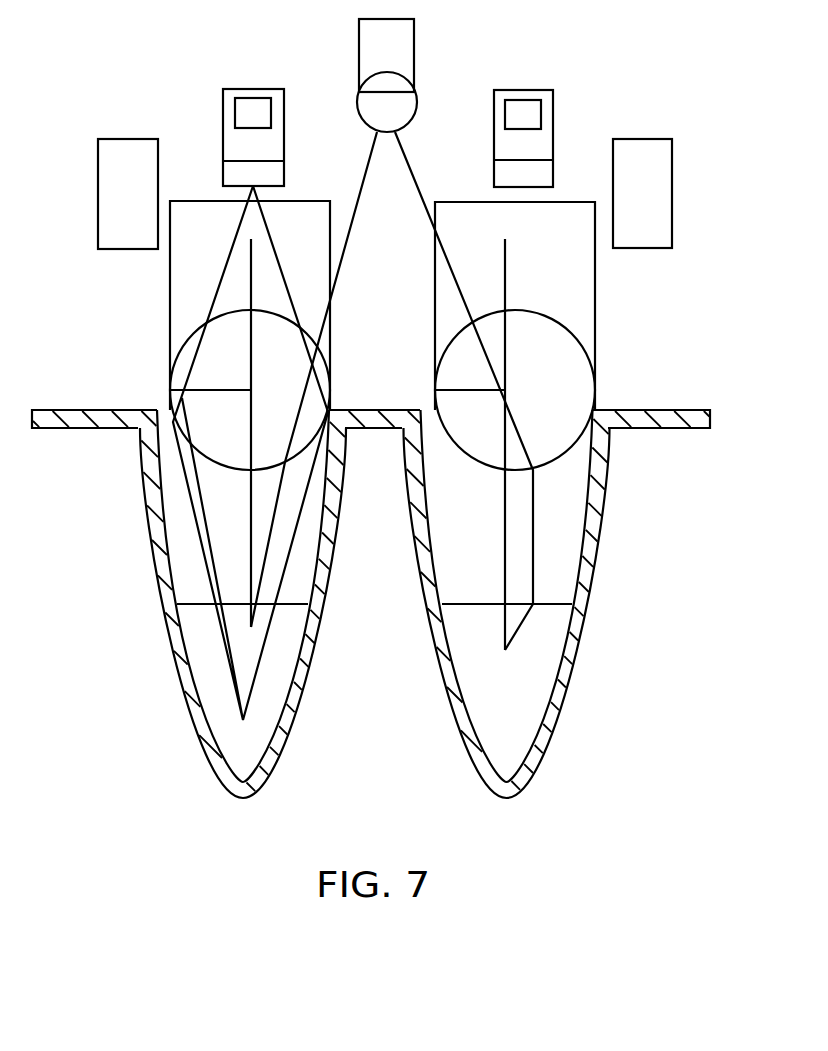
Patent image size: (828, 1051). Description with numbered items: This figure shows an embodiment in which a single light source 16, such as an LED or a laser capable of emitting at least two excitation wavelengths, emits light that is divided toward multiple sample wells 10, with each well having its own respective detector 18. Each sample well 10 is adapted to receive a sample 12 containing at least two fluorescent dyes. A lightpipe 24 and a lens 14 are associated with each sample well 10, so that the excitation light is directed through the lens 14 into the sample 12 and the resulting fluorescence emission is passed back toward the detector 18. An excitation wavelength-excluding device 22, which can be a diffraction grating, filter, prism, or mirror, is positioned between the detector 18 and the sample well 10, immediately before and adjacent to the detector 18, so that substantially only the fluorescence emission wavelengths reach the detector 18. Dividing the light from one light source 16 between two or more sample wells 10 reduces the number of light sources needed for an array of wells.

The sample well 10 is at (371, 604).
The sample 12 is at (220, 705).
The lens 14 is at (232, 470).
The light source 16 is at (414, 52).
The detector 18 is at (284, 118).
The excitation wavelength-excluding device 22 is at (531, 188).
The lightpipe 24 is at (170, 305).